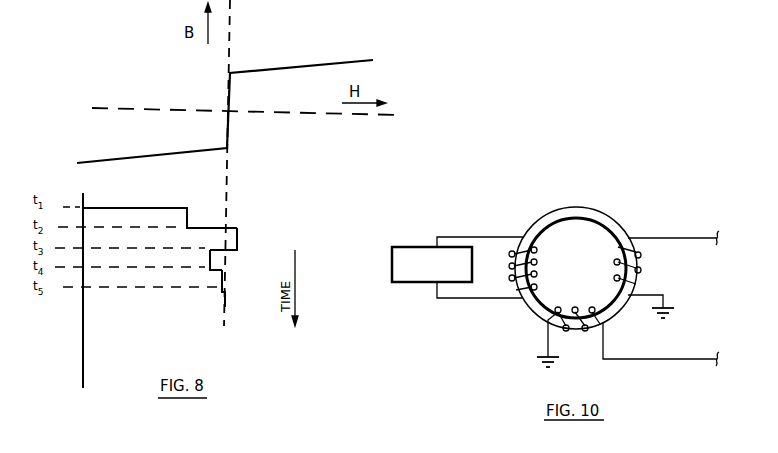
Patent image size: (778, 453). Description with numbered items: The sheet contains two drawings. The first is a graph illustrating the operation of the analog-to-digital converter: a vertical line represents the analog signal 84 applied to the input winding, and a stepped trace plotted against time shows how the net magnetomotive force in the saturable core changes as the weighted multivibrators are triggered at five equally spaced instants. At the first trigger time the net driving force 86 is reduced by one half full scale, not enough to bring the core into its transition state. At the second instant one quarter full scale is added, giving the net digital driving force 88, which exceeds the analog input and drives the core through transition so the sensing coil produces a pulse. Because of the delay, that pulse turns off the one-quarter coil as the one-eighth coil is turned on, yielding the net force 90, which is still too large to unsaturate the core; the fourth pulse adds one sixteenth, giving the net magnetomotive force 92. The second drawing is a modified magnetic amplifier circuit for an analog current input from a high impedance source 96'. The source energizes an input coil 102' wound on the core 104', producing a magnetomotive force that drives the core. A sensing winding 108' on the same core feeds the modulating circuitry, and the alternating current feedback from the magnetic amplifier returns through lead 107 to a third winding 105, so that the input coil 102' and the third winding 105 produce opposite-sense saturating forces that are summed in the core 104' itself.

In FIG. 8, the analog signal 84 is at (84, 233).
In FIG. 8, the net driving force 86 is at (191, 217).
In FIG. 8, the net digital driving force 88 is at (237, 243).
In FIG. 8, the net force 90 is at (210, 258).
In FIG. 8, the net magnetomotive force 92 is at (225, 280).
In FIG. 10, the high impedance source 96' is at (419, 260).
In FIG. 10, the input coil 102' is at (541, 268).
In FIG. 10, the core 104' is at (569, 271).
In FIG. 10, the third winding 105 is at (586, 331).
In FIG. 10, the lead 107 is at (689, 360).
In FIG. 10, the sensing winding 108' is at (666, 274).